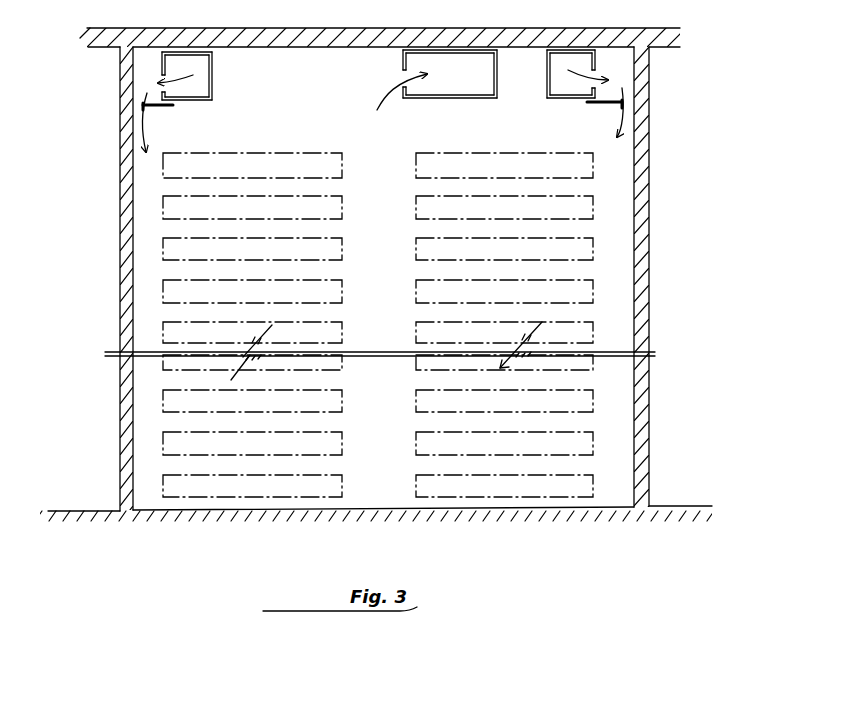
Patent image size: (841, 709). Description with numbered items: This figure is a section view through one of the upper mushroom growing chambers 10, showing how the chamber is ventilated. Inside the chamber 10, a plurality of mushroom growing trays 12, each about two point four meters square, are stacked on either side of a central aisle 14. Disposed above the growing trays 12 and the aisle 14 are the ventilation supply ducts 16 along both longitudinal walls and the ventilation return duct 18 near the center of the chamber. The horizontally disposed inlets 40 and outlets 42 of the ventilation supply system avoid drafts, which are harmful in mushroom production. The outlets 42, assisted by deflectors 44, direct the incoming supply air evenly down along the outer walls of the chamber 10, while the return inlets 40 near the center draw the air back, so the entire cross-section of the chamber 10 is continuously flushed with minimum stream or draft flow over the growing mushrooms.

The upper chamber 10 is at (617, 250).
The mushroom growing trays 12 is at (438, 247).
The aisle 14 is at (392, 287).
The ventilation supply ducts 16 is at (203, 65).
The ventilation return ducts 18 is at (460, 80).
The inlets 40 is at (405, 73).
The outlets 42 is at (152, 78).
The deflectors 44 is at (163, 106).